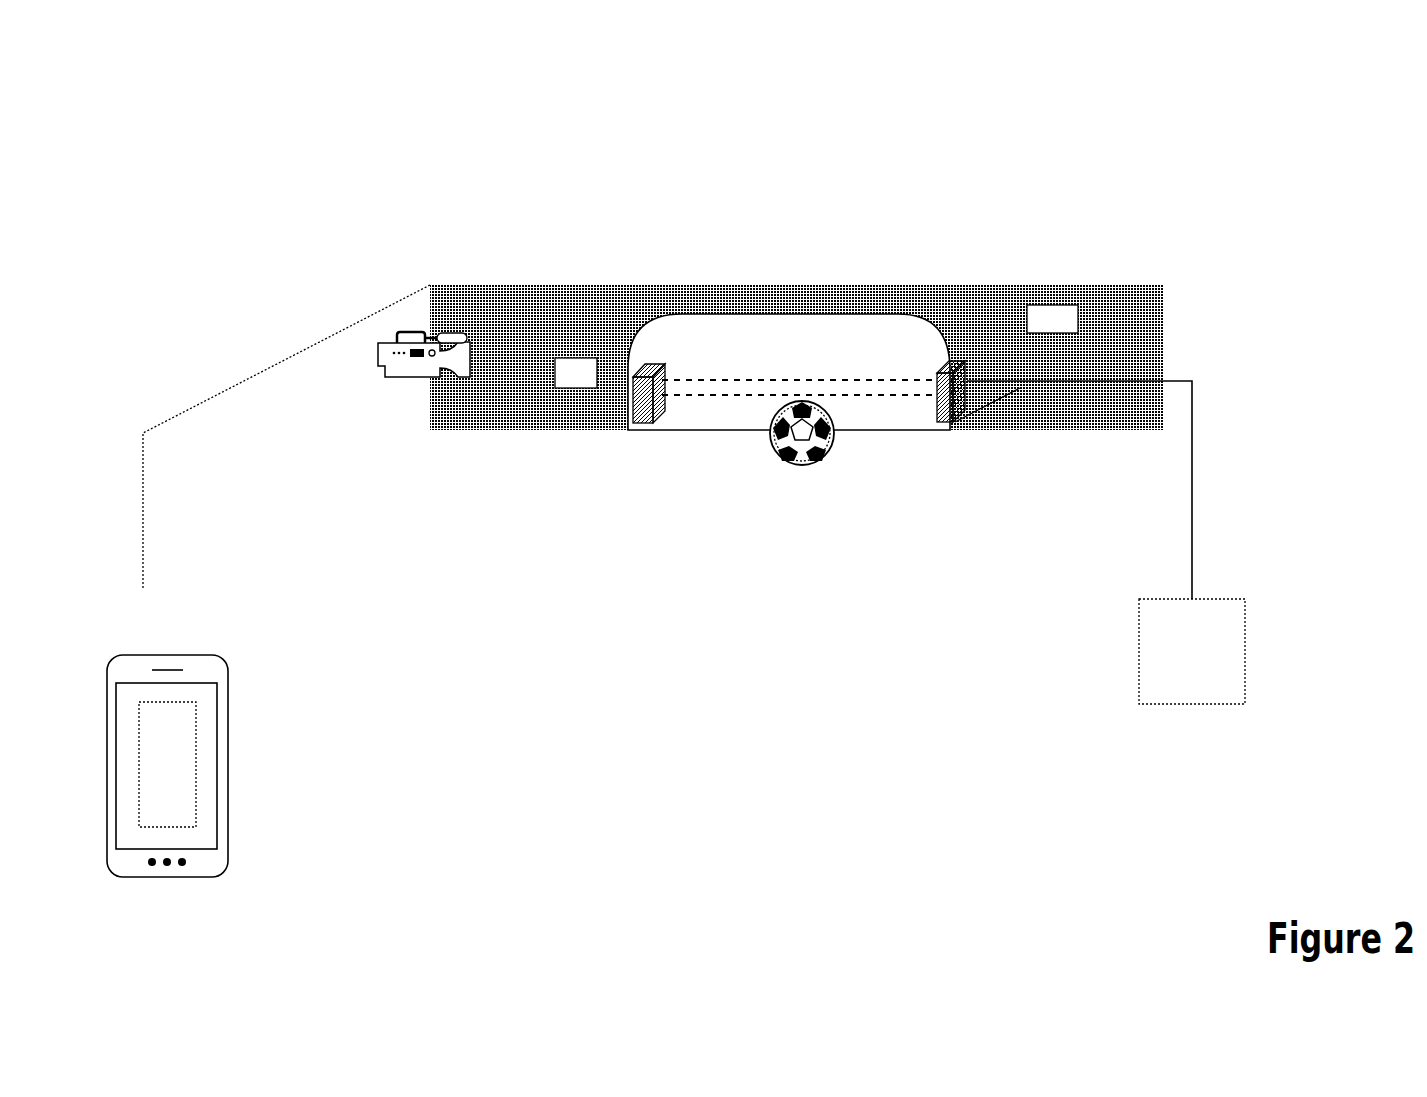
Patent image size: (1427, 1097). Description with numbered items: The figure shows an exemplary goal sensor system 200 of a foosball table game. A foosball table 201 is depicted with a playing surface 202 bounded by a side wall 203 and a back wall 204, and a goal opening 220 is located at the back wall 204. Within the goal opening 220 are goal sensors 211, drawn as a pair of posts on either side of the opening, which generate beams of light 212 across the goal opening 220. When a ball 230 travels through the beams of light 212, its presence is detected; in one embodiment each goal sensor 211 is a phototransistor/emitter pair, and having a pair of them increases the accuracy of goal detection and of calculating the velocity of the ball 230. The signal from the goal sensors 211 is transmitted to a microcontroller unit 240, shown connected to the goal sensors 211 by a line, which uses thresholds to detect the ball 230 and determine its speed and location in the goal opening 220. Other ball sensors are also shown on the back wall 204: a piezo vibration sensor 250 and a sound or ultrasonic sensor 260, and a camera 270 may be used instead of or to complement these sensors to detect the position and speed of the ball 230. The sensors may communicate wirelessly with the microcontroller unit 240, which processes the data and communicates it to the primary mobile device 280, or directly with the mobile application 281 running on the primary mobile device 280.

The goal sensor system 200 is at (748, 62).
The foosball table 201 is at (502, 598).
The playing surface 202 is at (308, 530).
The side walls 203 is at (357, 373).
The back walls 204 is at (483, 340).
The goal sensors 211 is at (918, 370).
The beams of light 212 is at (798, 399).
The goal opening 220 is at (930, 325).
The ball 230 is at (840, 434).
The microcontroller unit 240 is at (1100, 542).
The piezo vibration sensor 250 is at (576, 373).
The sound (or ultrasonic) sensor 260 is at (1052, 319).
The camera 270 is at (424, 364).
The primary mobile device 280 is at (141, 766).
The mobile application 281 is at (167, 764).